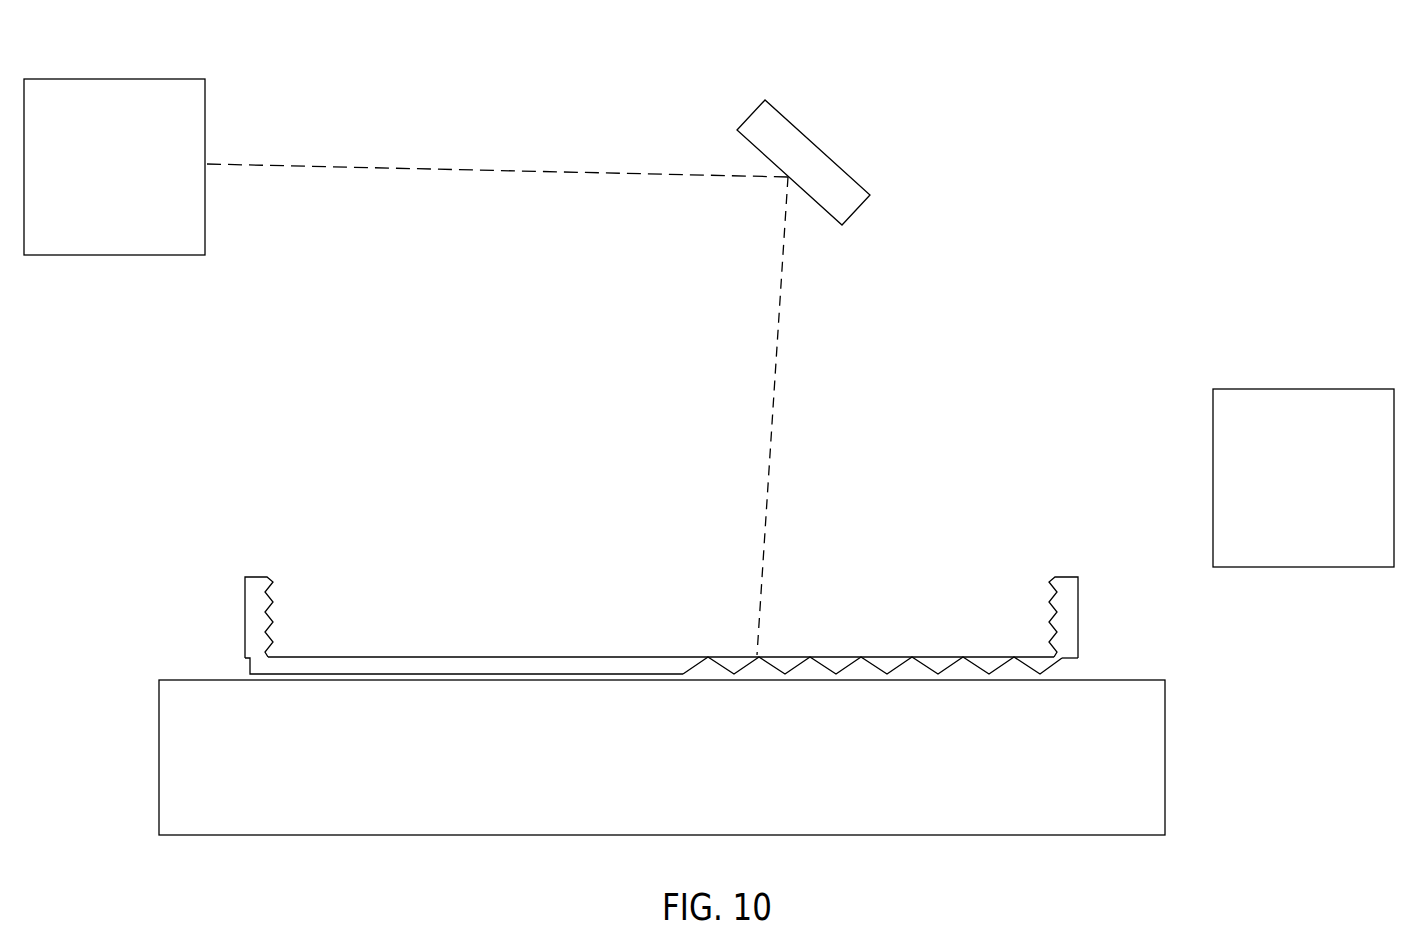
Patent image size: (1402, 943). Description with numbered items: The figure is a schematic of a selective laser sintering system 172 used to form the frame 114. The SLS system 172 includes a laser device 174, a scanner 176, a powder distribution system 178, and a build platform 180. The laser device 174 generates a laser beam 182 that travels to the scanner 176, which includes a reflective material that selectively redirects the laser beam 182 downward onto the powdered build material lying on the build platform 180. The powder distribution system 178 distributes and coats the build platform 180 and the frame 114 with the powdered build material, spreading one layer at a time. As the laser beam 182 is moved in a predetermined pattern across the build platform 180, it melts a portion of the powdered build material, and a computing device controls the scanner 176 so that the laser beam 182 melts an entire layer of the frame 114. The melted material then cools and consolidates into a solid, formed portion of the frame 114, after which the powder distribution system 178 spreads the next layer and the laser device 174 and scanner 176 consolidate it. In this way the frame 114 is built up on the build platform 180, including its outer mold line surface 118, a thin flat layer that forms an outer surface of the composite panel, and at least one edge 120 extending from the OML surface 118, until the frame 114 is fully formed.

The selective laser sintering system 172 is at (445, 82).
The laser device 174 is at (129, 255).
The scanner 176 is at (824, 152).
The powder distribution system 178 is at (1270, 389).
The build platform 180 is at (159, 757).
The laser beam 182 is at (778, 330).
The frame 114 is at (659, 625).
The edge 120 is at (250, 638).
The outer mold line surface 118 is at (528, 662).